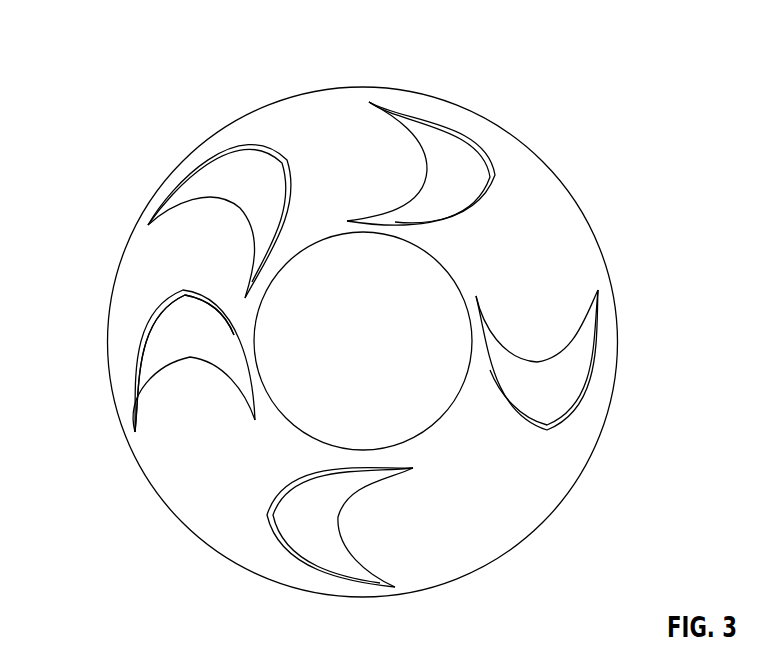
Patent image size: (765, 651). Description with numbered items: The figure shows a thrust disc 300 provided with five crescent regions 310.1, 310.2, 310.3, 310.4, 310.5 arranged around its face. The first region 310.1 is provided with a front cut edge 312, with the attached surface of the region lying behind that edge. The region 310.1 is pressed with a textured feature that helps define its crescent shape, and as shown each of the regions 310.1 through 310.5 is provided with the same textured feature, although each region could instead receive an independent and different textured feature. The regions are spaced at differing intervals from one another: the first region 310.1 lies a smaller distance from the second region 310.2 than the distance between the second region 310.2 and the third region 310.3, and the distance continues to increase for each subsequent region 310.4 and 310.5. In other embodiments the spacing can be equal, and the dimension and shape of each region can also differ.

The thrust disc 300 is at (84, 31).
The first region 310.1 is at (144, 384).
The crescent region 310.2 is at (209, 172).
The crescent region 310.3 is at (446, 154).
The crescent region 310.4 is at (570, 361).
The crescent region 310.5 is at (309, 553).
The front cut edge 312 is at (163, 291).